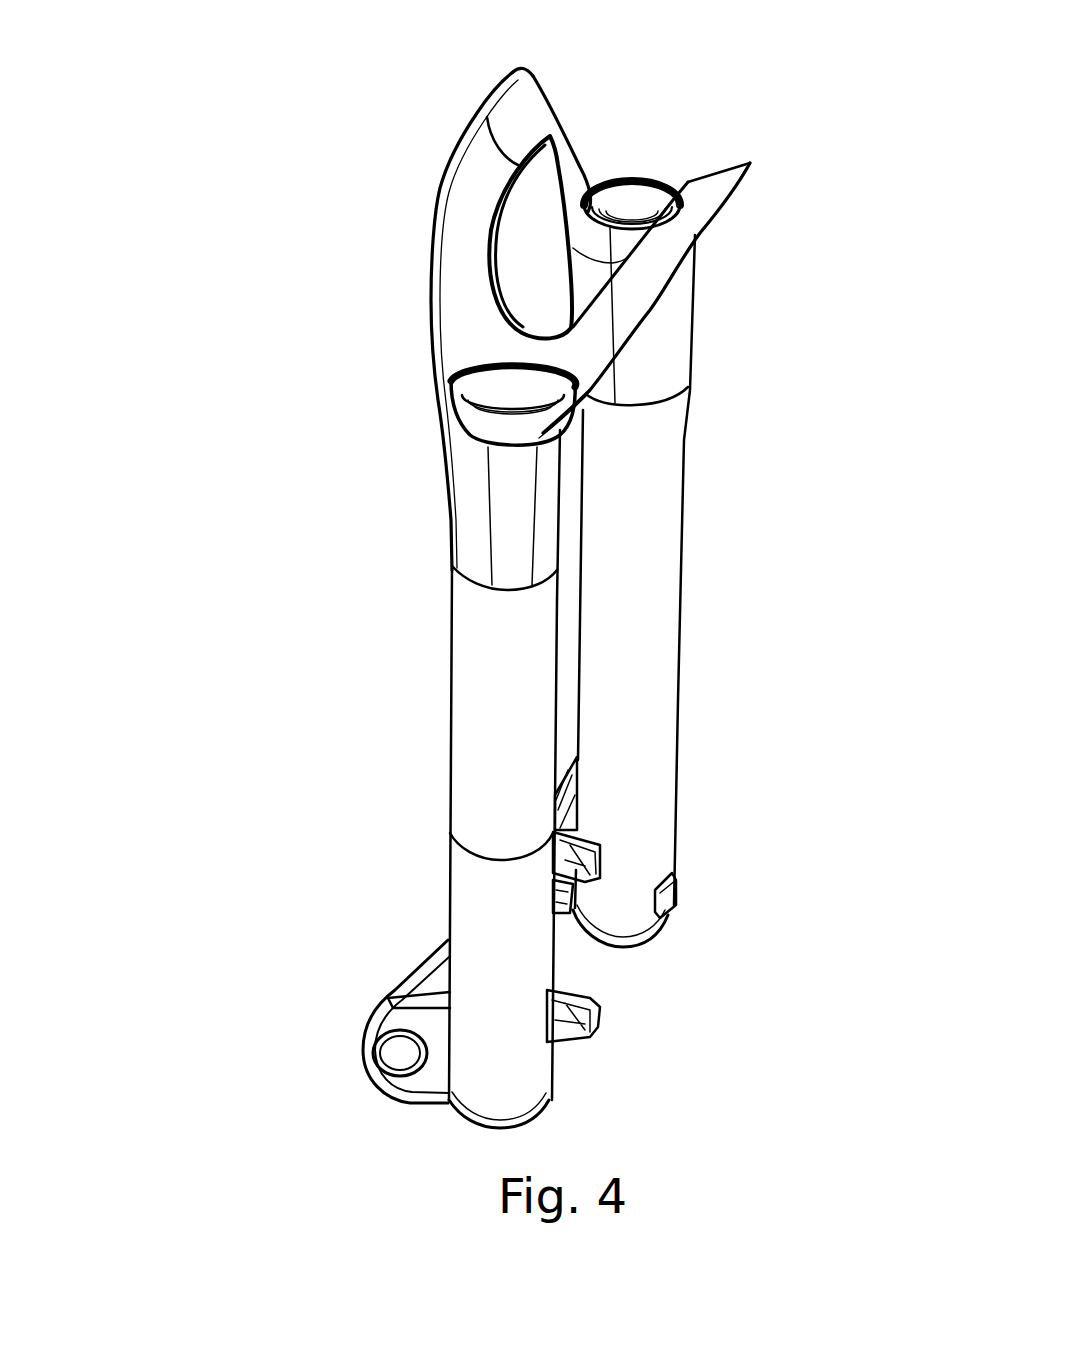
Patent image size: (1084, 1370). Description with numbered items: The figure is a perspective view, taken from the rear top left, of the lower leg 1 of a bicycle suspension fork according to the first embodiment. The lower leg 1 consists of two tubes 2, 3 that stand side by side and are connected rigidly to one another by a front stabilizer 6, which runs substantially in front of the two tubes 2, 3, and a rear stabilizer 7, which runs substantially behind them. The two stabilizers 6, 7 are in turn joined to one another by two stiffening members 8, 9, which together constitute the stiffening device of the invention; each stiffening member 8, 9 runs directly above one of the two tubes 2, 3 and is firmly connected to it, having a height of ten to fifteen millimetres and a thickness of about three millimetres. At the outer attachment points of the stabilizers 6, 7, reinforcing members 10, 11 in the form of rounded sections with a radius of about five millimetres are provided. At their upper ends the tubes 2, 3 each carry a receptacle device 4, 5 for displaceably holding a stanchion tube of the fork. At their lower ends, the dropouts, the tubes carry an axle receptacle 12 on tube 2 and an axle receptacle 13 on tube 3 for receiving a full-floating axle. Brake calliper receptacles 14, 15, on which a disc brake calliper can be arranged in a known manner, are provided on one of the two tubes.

The lower leg 1 is at (273, 550).
The tube 2 is at (648, 481).
The tube 3 is at (485, 730).
The receptacle device for stanchion tube 4 is at (628, 217).
The receptacle device for stanchion tube 5 is at (507, 417).
The front stabilizer 6 is at (517, 103).
The rear stabilizer 7 is at (700, 197).
The stiffening member 8 is at (577, 230).
The stiffening member 9 is at (498, 342).
The reinforcing member 10 is at (587, 192).
The reinforcing member 11 is at (452, 400).
The axle receptacle 12 is at (563, 812).
The axle receptacle 13 is at (385, 1003).
The brake calliper receptacle 14 is at (607, 853).
The brake calliper receptacle 15 is at (573, 1033).